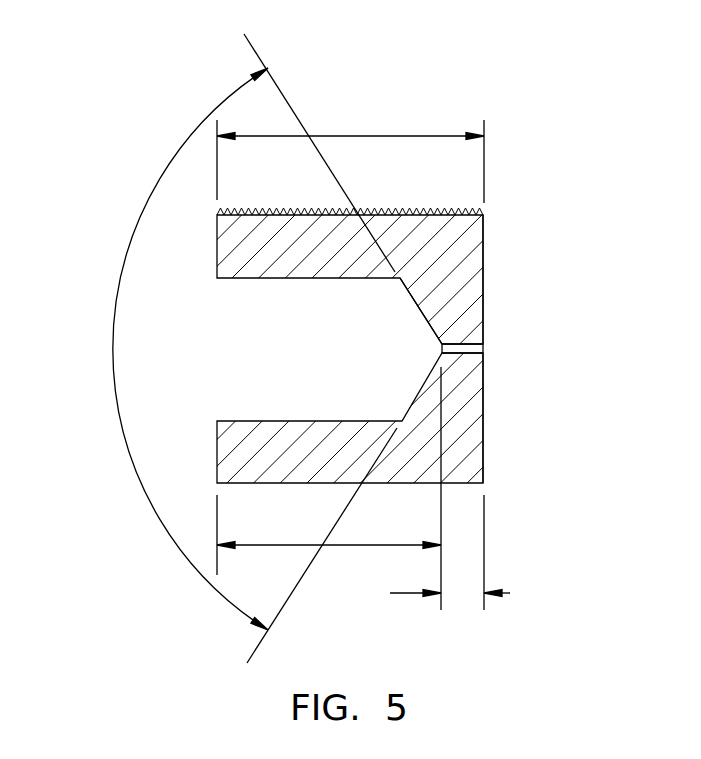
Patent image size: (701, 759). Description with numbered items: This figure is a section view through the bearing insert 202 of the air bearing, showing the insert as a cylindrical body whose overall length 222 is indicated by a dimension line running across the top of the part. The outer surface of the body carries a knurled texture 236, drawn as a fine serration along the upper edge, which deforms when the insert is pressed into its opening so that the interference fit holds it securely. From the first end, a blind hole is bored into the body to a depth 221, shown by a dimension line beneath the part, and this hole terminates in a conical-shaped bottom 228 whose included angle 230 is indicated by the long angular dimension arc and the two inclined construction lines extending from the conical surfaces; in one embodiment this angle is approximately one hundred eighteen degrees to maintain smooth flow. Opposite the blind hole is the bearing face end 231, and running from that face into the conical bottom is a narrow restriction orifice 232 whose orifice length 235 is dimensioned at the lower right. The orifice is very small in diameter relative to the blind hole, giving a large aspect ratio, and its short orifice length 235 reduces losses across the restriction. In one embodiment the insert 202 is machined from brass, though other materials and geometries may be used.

The bearing insert 202 is at (486, 246).
The depth 221 is at (346, 548).
The length 222 is at (372, 135).
The conical-shaped bottom 228 is at (418, 323).
The angle 230 is at (113, 377).
The bearing face end 231 is at (485, 427).
The orifice 232 is at (485, 352).
The orifice length 235 is at (535, 582).
The knurled texture 236 is at (287, 206).